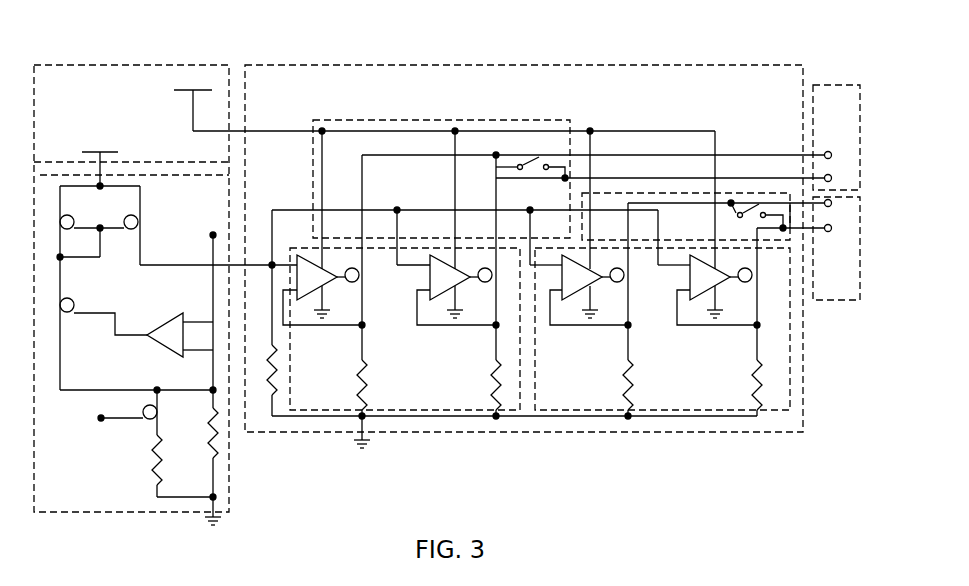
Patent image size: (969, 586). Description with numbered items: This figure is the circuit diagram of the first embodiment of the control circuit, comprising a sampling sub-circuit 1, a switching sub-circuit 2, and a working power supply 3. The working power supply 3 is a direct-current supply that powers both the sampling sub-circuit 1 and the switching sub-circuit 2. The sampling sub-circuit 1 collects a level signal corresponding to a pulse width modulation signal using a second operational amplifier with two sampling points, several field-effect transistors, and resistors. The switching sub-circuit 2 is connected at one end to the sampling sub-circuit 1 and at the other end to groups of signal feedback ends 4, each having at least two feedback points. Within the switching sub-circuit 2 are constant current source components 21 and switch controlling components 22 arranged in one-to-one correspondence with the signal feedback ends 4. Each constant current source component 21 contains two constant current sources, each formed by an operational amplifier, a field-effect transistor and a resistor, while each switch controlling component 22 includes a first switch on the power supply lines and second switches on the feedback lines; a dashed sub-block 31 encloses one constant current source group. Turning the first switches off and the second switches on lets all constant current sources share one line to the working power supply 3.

The sampling sub-circuit 1 is at (229, 470).
The switching sub-circuit 2 is at (535, 259).
The working power supply 3 is at (185, 65).
The signal feedback end 4 is at (832, 85).
The constant current source component 21 is at (603, 412).
The switch controlling component 22 is at (352, 120).
The first switching unit 31 is at (425, 410).